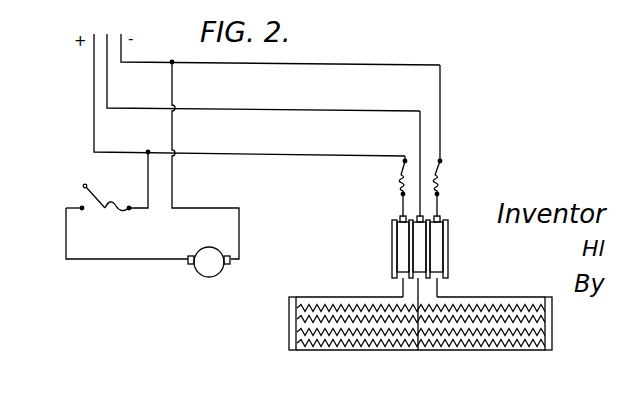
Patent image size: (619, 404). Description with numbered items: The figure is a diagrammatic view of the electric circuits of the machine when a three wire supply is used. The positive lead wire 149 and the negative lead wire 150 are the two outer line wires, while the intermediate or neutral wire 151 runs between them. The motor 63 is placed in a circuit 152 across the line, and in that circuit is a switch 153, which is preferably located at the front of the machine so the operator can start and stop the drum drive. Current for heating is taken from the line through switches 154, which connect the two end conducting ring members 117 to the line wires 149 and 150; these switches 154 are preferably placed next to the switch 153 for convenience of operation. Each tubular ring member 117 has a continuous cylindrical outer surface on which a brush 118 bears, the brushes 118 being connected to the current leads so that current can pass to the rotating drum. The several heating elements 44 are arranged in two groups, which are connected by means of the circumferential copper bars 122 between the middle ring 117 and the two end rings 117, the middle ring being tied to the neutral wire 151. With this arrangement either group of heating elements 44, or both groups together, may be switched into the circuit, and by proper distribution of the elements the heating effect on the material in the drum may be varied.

The positive lead wire 149 is at (94, 97).
The negative lead wire 150 is at (150, 61).
The intermediate or neutral wire 151 is at (258, 107).
The motor circuit 152 is at (174, 212).
The switch 153 is at (99, 192).
The motor 63 is at (206, 265).
The switches 154 is at (401, 172).
The brush 118 is at (421, 217).
The tubular current conducting ring member 117 is at (400, 247).
The heating elements 44 is at (487, 310).
The copper bars 122 is at (289, 315).